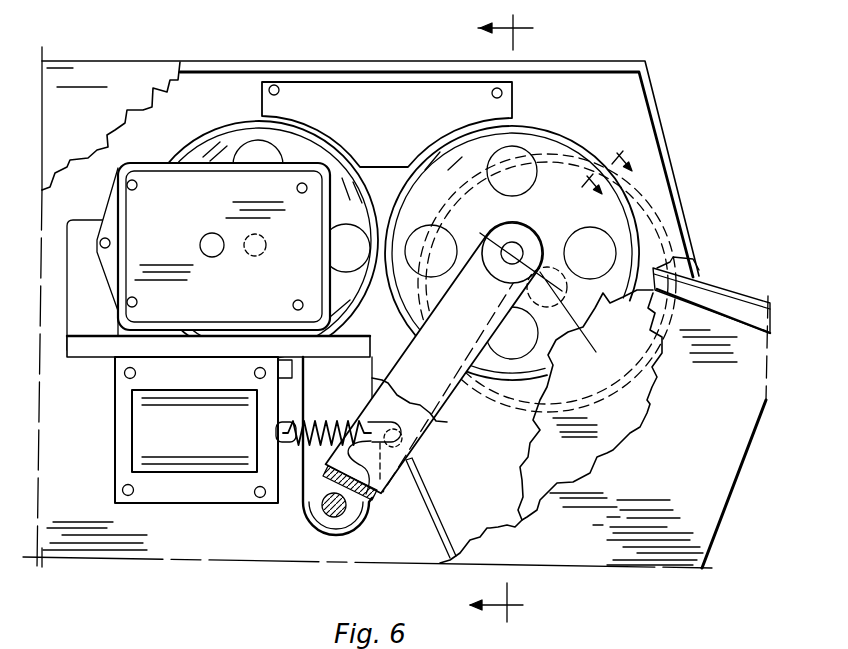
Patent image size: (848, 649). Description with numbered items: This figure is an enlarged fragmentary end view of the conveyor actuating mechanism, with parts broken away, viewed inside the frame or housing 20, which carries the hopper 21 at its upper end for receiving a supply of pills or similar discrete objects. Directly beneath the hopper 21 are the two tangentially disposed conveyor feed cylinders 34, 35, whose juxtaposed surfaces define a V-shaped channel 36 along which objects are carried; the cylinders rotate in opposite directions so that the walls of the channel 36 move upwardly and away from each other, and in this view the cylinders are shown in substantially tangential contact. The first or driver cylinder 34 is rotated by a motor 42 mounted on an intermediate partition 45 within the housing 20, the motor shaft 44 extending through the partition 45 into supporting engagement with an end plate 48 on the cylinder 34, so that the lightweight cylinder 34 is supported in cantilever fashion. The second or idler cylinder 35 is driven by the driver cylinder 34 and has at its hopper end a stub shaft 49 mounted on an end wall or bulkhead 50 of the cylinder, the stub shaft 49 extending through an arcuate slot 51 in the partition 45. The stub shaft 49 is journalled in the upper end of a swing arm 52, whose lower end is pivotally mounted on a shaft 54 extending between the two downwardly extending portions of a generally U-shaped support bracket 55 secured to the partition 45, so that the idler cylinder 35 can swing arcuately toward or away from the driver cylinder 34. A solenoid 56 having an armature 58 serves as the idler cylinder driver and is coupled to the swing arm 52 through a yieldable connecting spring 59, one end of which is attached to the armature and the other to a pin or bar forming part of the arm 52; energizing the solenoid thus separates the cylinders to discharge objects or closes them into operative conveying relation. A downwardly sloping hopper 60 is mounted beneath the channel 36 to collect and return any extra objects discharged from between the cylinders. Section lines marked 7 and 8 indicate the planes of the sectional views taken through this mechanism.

The section line 7- 7 is at (492, 318).
The section line 8- 8 is at (613, 183).
The frame or housing 20 is at (680, 196).
The hopper 21 is at (428, 110).
The conveyor feed cylinder 34 is at (218, 128).
The idler cylinder 35 is at (587, 146).
The channel 36 is at (383, 183).
The motor 42 is at (158, 220).
The shaft 44 is at (248, 256).
The intermediate partition 45 is at (83, 78).
The end plate 48 is at (197, 150).
The stub shaft 49 is at (516, 242).
The end wall or bulkhead 50 is at (530, 140).
The arcuate slot 51 is at (370, 128).
The arm 52 is at (461, 401).
The shaft 54 is at (342, 518).
The U-shaped support bracket 55 is at (303, 516).
The solenoid 56 is at (183, 444).
The armature 58 is at (294, 421).
The connecting spring 59 is at (380, 497).
The hopper 60 is at (492, 528).